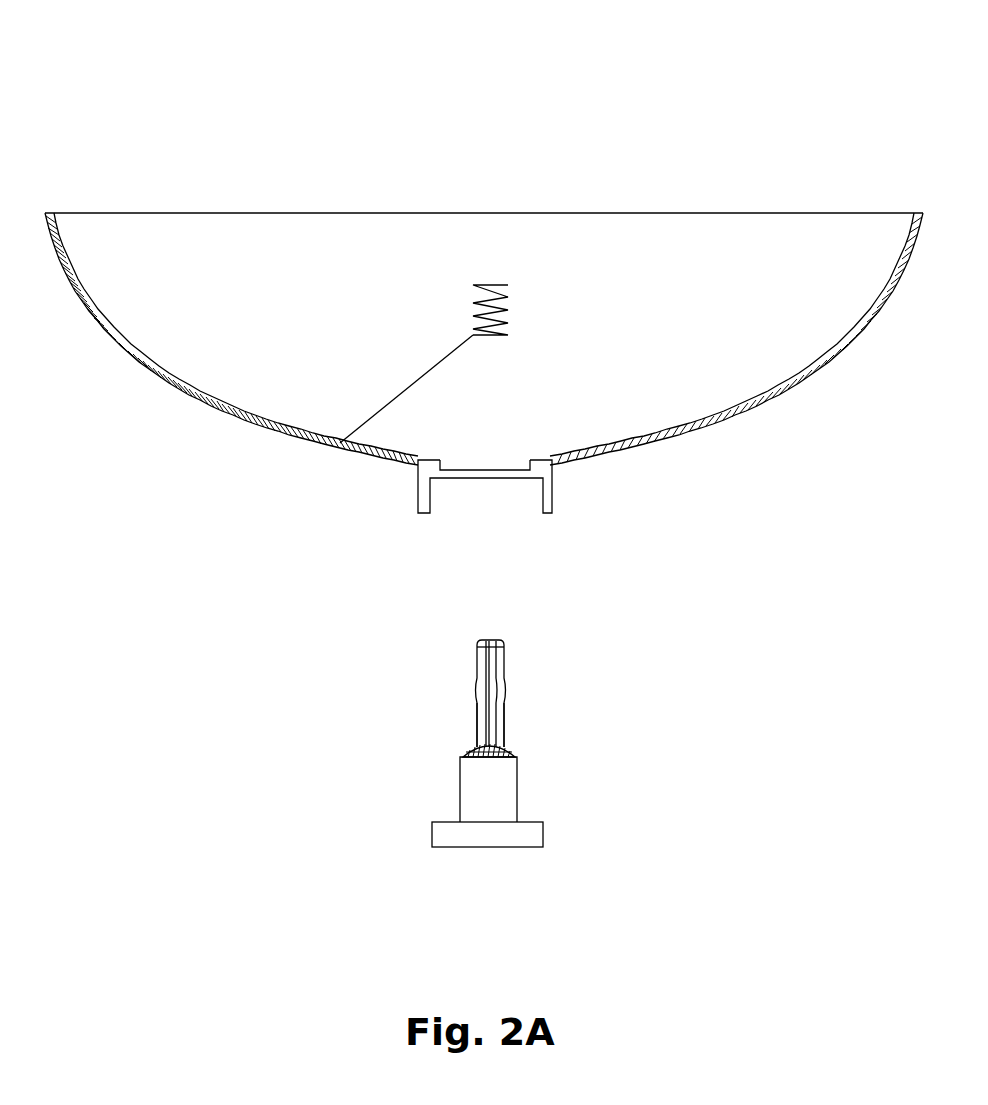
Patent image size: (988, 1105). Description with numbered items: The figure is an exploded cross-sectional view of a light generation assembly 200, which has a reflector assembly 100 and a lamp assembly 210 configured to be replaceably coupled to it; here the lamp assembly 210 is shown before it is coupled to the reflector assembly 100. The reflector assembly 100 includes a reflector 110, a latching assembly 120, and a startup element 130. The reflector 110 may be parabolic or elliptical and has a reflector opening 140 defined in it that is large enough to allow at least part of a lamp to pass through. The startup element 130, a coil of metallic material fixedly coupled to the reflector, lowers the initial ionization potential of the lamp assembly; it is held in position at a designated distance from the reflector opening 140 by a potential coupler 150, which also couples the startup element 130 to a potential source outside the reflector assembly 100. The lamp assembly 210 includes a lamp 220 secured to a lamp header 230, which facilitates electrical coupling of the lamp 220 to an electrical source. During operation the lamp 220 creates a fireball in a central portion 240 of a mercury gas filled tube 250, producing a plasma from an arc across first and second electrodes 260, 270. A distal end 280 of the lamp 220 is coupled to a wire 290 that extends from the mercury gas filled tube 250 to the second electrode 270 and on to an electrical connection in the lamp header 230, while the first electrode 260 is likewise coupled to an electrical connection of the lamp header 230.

The reflector assembly 100 is at (151, 147).
The reflector 110 is at (196, 412).
The latching assembly 120 is at (553, 513).
The startup element 130 is at (508, 285).
The reflector opening 140 is at (481, 489).
The potential coupler 150 is at (377, 418).
The light generation assembly 200 is at (520, 52).
The lamp assembly 210 is at (626, 696).
The lamp 220 is at (453, 680).
The lamp header 230 is at (509, 846).
The central portion 240 is at (476, 696).
The mercury gas filled tube 250 is at (471, 731).
The first electrode 260 is at (503, 756).
The second electrode 270 is at (489, 640).
The distal end 280 is at (477, 645).
The wire 290 is at (505, 733).